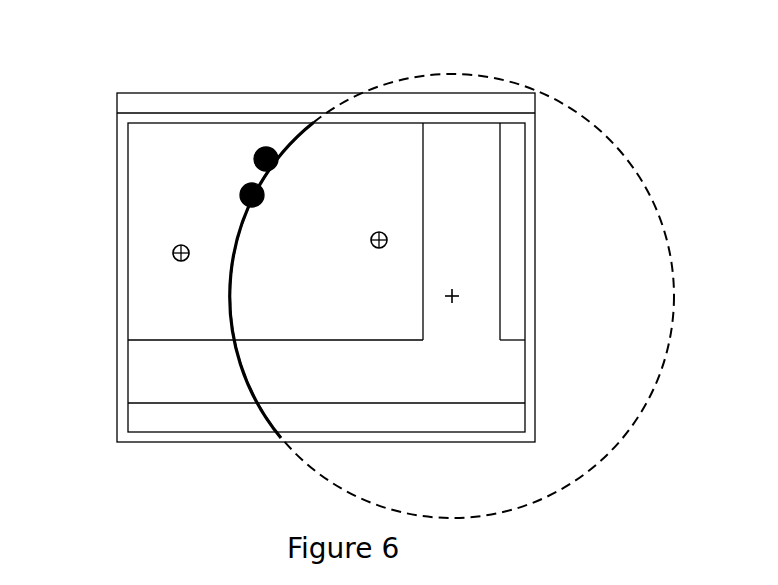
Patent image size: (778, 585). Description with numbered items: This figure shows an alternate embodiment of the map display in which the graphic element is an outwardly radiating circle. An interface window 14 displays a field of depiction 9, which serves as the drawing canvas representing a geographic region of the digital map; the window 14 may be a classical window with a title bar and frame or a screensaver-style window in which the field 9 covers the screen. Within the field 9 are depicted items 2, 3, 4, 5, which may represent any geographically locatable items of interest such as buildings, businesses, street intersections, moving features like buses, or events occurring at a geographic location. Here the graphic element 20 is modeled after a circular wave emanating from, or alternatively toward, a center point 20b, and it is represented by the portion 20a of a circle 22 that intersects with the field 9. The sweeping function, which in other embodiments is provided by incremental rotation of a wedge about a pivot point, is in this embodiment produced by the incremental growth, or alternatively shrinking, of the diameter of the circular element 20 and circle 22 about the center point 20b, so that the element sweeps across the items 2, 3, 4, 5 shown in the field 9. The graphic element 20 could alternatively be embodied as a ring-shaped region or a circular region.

The item 2 is at (256, 161).
The item 3 is at (242, 198).
The item 4 is at (173, 256).
The item 5 is at (371, 243).
The field of depiction 9 is at (526, 145).
The interface window 14 is at (536, 185).
The graphic element 20 is at (250, 231).
The portion of circle 20a is at (293, 140).
The center point 20b is at (461, 293).
The circle 22 is at (666, 236).